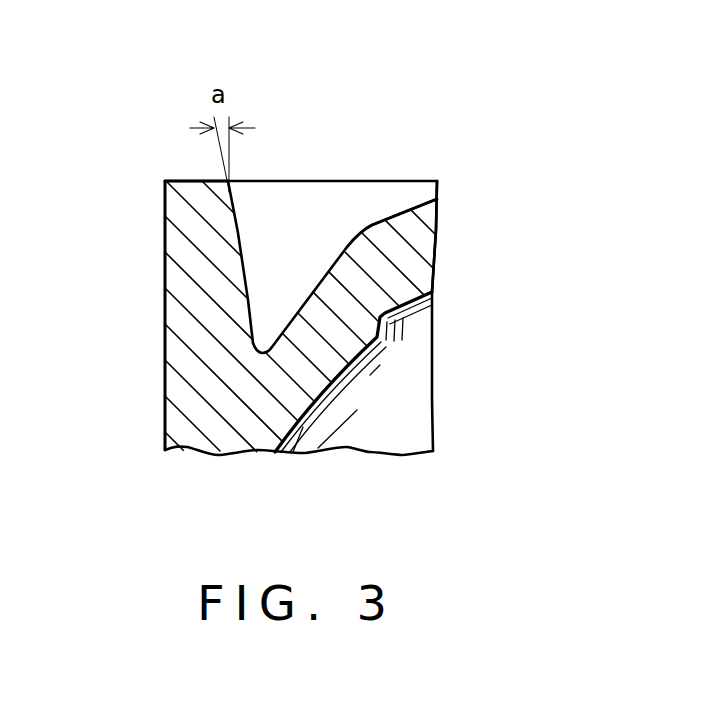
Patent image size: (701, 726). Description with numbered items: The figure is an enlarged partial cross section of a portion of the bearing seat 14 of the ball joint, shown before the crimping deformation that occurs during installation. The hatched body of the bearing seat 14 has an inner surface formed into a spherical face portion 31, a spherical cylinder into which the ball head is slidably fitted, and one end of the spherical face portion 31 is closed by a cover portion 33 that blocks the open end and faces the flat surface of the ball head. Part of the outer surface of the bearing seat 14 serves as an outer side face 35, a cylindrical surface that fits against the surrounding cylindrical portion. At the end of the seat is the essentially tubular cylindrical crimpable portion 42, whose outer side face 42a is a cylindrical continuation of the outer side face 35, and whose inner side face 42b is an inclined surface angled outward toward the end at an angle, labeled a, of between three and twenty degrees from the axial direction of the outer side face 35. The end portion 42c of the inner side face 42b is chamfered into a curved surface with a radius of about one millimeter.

The bearing seat 14 is at (448, 228).
The spherical face portion 31 is at (305, 453).
The cover portion 33 is at (408, 222).
The outer side face 35 is at (165, 425).
The cylindrical crimpable portion 42 is at (173, 248).
The outer side face 42a is at (165, 222).
The inner side face 42b is at (240, 232).
The end portion 42c is at (226, 190).